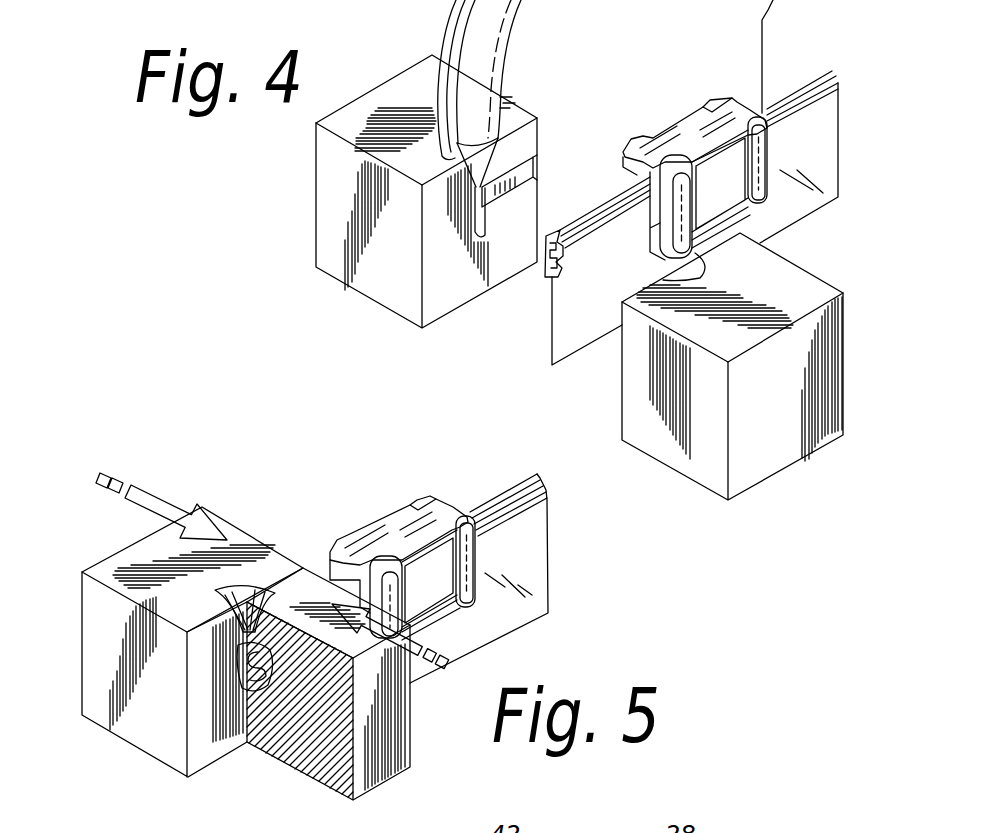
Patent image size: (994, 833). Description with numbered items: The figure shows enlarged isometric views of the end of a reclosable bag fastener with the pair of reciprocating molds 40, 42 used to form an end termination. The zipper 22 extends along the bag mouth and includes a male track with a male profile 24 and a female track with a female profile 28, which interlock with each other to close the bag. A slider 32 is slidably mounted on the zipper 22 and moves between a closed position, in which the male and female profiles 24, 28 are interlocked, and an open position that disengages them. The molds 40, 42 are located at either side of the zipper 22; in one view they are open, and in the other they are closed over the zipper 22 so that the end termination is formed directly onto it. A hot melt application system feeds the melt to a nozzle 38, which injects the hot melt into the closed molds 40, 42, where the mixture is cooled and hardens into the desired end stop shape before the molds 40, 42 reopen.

In FIG. 4, the zipper 22 is at (823, 107).
In FIG. 5, the zipper 22 is at (520, 480).
In FIG. 5, the male profile 24 is at (549, 512).
In FIG. 4, the female profile 28 is at (760, 113).
In FIG. 5, the female profile 28 is at (467, 500).
In FIG. 4, the slider 32 is at (677, 130).
In FIG. 5, the slider 32 is at (388, 530).
In FIG. 4, the nozzle 38 is at (520, 70).
In FIG. 4, the mold 40 is at (538, 137).
In FIG. 5, the mold 40 is at (252, 532).
In FIG. 4, the mold 42 is at (843, 322).
In FIG. 5, the mold 42 is at (390, 772).